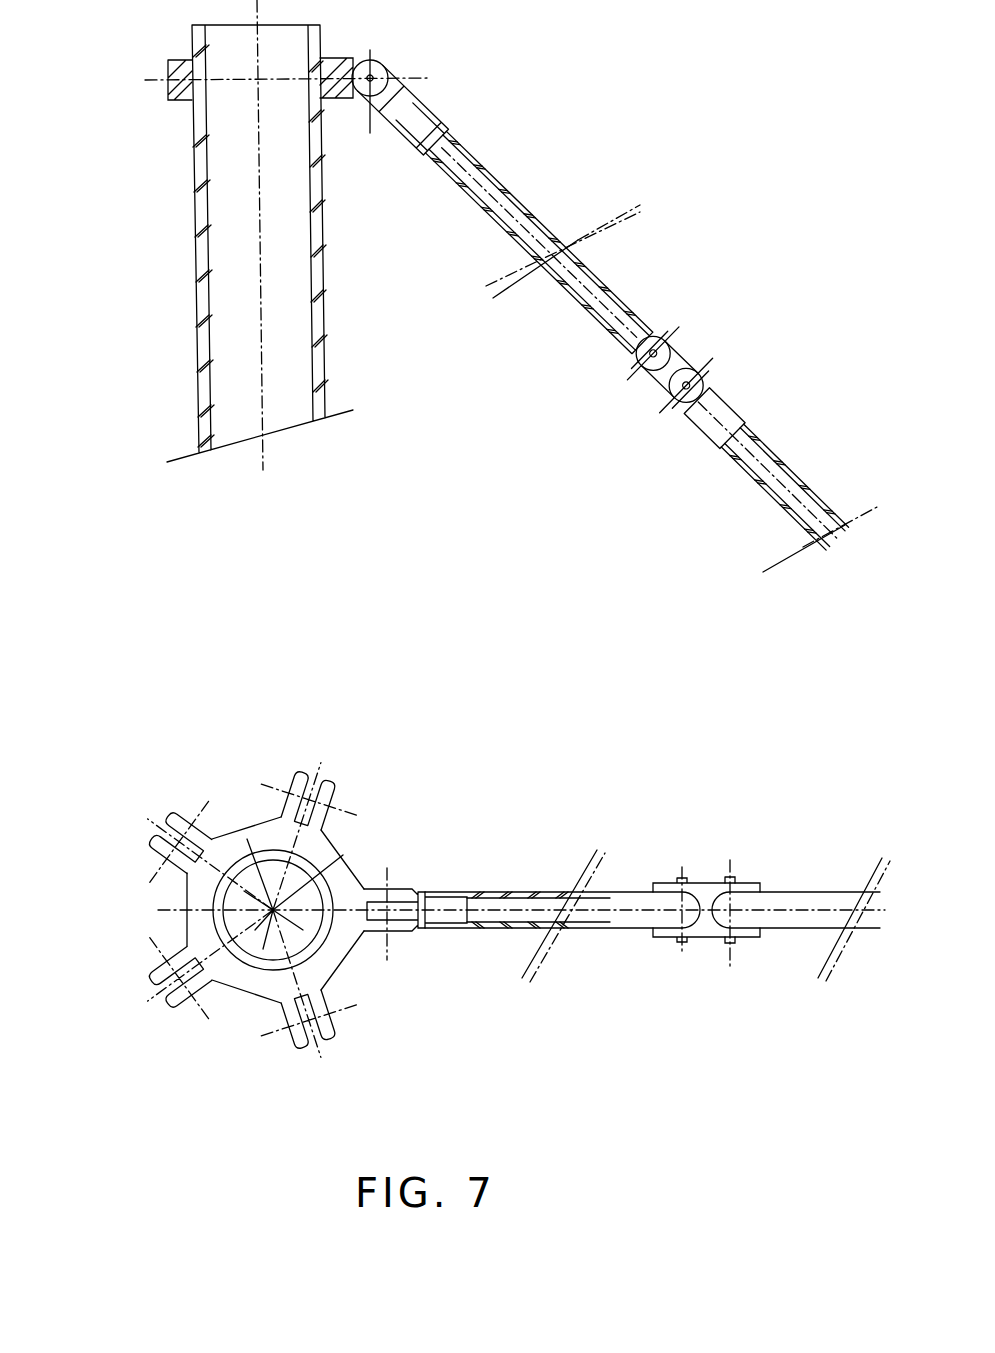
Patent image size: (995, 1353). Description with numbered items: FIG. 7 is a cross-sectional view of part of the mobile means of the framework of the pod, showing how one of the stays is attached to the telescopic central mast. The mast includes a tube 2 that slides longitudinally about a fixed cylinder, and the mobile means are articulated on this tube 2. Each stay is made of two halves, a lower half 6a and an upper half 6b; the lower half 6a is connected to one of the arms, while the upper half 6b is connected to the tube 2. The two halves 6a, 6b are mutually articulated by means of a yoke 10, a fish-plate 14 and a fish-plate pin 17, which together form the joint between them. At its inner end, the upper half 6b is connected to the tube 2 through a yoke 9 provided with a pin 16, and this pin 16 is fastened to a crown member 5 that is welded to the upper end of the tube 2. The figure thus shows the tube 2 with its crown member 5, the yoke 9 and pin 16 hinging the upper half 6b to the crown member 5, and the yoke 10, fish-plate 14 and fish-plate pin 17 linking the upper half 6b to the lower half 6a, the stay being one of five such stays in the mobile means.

The tube 2 is at (203, 403).
The crown member 5 is at (145, 825).
The pin 16 is at (371, 97).
The yoke 9 is at (417, 125).
The upper half of stay 6b is at (548, 891).
The fish-plate 14 is at (702, 892).
The fish-plate pin 17 is at (728, 878).
The yoke 10 is at (718, 422).
The lower half of stay 6a is at (840, 895).